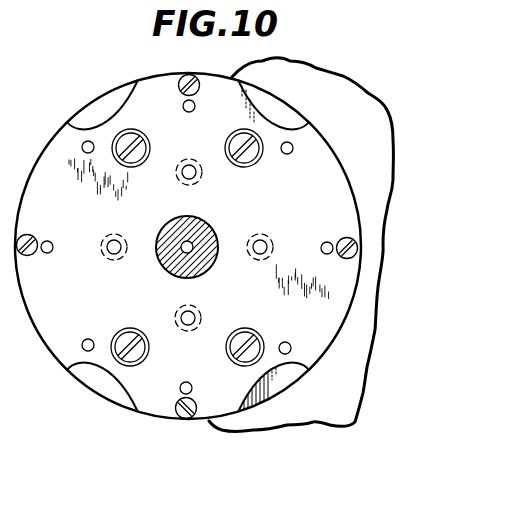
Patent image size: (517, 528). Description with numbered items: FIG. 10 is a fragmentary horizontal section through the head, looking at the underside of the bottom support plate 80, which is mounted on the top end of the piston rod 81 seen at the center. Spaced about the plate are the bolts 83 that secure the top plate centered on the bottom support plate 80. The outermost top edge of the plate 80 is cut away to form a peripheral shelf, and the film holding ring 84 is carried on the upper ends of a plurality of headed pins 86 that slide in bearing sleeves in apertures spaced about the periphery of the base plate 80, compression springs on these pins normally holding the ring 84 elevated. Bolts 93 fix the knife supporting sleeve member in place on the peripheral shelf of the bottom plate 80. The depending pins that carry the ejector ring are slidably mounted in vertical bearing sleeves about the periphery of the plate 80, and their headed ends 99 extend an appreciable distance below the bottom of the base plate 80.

The bottom support plate 80 is at (76, 301).
The piston rod 81 is at (175, 225).
The bolts 83 is at (258, 235).
The film holding ring 84 is at (110, 102).
The headed pins 86 is at (32, 235).
The bolts 93 is at (53, 244).
The headed ends 99 is at (226, 143).